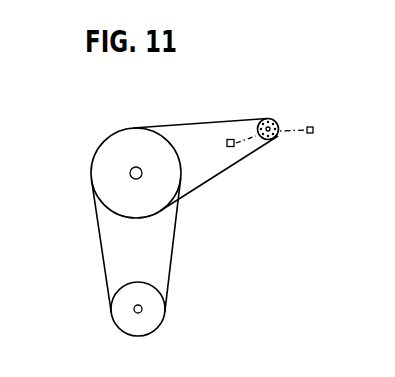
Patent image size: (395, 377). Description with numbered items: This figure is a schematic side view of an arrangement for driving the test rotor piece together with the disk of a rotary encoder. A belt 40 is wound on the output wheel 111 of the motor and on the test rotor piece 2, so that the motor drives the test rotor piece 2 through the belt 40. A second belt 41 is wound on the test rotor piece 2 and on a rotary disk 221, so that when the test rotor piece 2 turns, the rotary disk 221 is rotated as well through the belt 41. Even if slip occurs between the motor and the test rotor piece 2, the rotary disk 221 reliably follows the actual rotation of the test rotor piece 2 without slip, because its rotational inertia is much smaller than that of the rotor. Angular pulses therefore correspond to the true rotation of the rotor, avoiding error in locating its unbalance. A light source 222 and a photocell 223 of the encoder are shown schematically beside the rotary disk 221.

The test rotor piece 2 is at (102, 172).
The belt 40 is at (100, 238).
The belt 41 is at (193, 122).
The output wheel 111 is at (147, 322).
The rotary disk 221 is at (273, 126).
The light source 222 is at (221, 145).
The photocell 223 is at (318, 141).